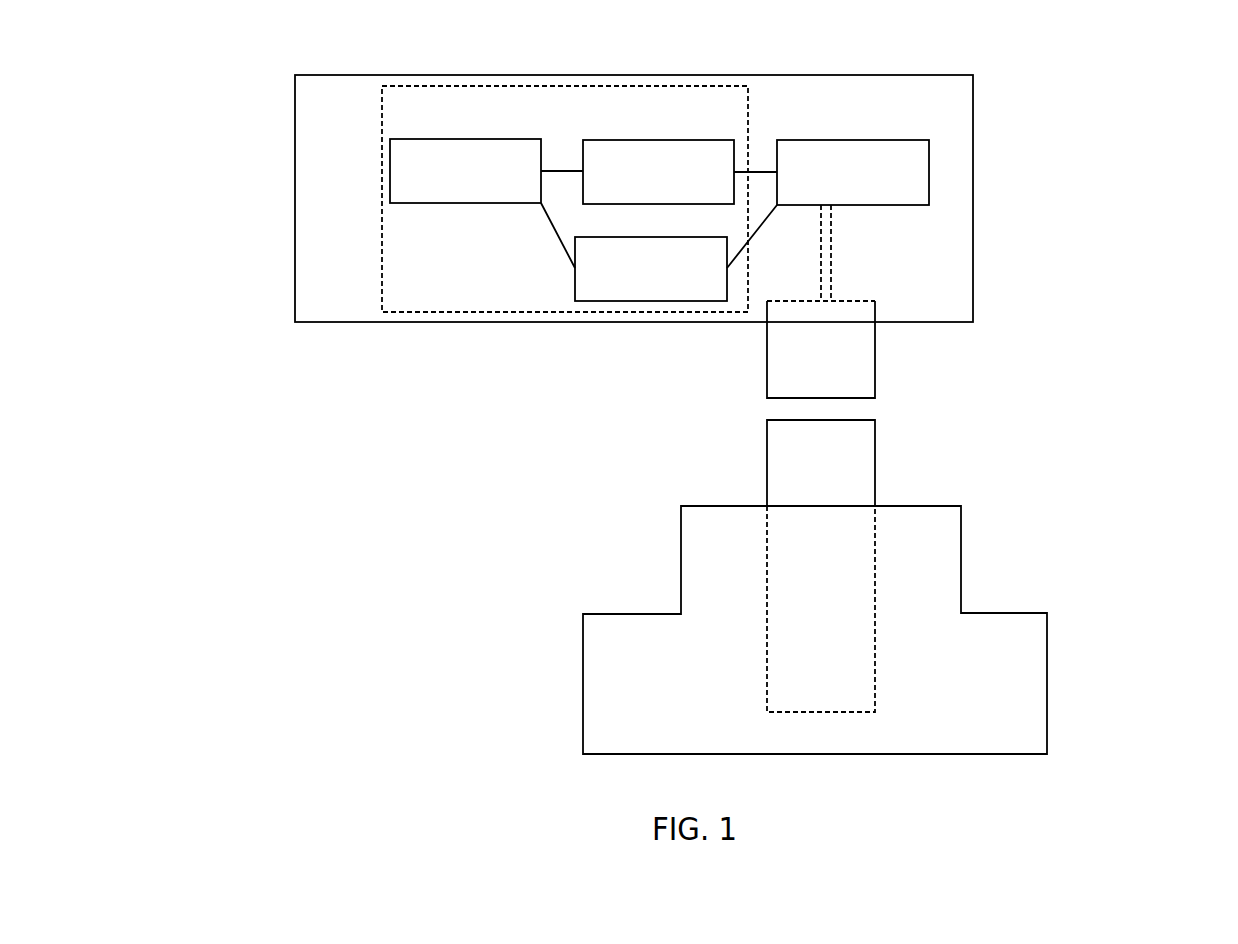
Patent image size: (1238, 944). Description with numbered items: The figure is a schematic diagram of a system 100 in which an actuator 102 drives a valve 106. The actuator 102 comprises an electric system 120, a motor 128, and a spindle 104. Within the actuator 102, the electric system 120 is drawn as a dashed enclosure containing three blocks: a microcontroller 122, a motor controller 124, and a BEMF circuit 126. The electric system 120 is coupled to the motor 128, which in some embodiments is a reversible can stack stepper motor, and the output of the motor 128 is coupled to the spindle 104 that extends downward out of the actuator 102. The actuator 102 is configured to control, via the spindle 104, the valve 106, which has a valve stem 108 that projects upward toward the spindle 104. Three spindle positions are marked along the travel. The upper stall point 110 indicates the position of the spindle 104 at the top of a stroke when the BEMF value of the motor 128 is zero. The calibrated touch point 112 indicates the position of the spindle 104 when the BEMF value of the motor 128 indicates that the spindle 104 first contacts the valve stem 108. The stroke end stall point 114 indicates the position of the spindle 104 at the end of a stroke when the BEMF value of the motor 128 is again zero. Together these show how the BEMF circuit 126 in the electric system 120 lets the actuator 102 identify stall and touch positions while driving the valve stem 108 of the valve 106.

The system 100 is at (201, 232).
The actuator 102 is at (306, 88).
The spindle 104 is at (777, 367).
The valve 106 is at (597, 623).
The valve stem 108 is at (777, 452).
The upper stall point 110 is at (878, 302).
The calibrated touch point 112 is at (878, 420).
The stroke end stall point 114 is at (878, 752).
The electric system 120 is at (406, 296).
The microcontroller 122 is at (530, 150).
The motor controller 124 is at (708, 150).
The BEMF circuit 126 is at (583, 293).
The motor 128 is at (922, 147).